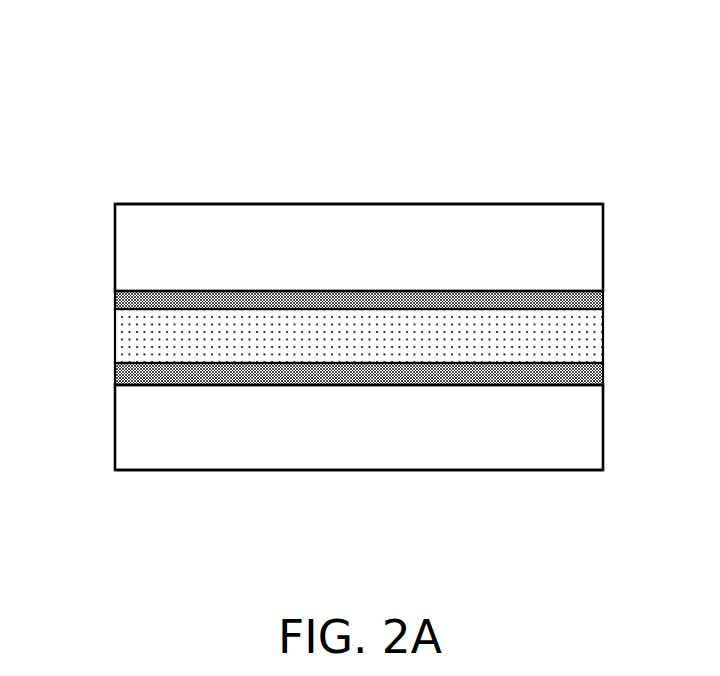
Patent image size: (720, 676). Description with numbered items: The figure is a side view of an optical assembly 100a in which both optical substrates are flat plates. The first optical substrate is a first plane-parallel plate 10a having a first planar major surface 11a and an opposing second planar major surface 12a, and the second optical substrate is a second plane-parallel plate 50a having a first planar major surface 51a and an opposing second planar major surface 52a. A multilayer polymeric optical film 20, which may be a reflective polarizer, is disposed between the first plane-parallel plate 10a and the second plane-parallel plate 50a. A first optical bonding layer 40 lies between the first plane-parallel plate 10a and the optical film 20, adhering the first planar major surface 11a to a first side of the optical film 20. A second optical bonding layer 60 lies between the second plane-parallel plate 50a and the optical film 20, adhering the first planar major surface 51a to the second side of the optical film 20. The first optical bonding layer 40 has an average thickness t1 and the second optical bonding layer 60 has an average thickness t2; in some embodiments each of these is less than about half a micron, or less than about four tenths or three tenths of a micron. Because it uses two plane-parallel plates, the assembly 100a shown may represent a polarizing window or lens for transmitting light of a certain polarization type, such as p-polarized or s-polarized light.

The optical assembly 100a is at (134, 95).
The first plane-parallel plate 10a is at (203, 205).
The first planar major surface 11a is at (156, 291).
The second planar major surface 12a is at (421, 204).
The first optical bonding layer 40 is at (598, 302).
The multilayer polymeric optical film 20 is at (598, 338).
The second optical bonding layer 60 is at (597, 375).
The second plane-parallel plate 50a is at (210, 442).
The first planar major surface 51a is at (168, 383).
The second planar major surface 52a is at (397, 470).
The average thickness of first optical bonding layer t1 is at (457, 338).
The average thickness of second optical bonding layer t2 is at (392, 328).